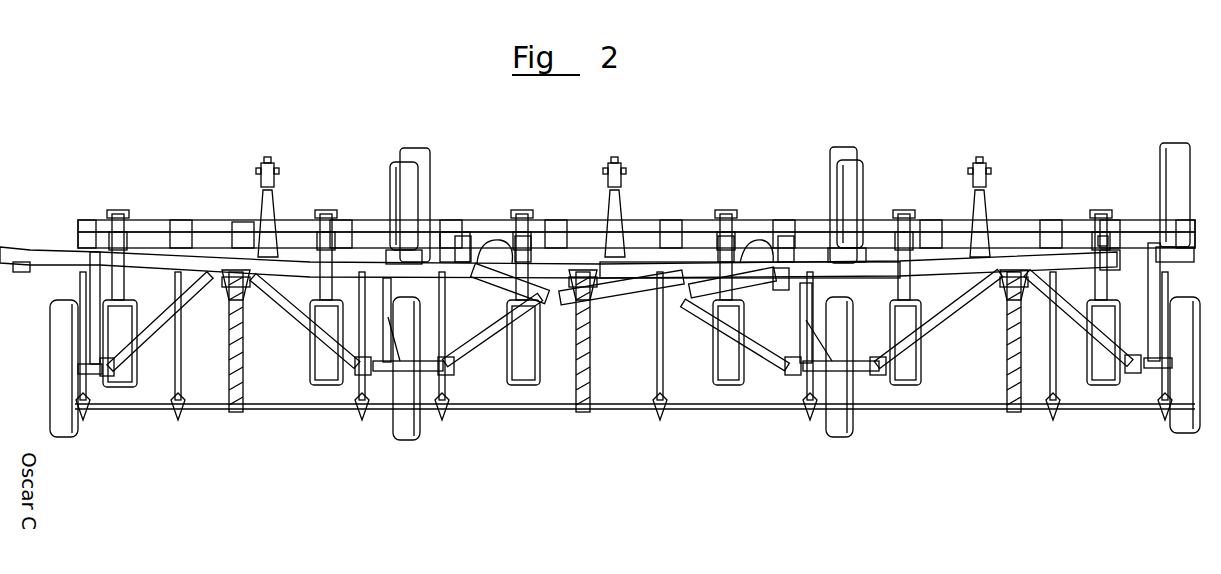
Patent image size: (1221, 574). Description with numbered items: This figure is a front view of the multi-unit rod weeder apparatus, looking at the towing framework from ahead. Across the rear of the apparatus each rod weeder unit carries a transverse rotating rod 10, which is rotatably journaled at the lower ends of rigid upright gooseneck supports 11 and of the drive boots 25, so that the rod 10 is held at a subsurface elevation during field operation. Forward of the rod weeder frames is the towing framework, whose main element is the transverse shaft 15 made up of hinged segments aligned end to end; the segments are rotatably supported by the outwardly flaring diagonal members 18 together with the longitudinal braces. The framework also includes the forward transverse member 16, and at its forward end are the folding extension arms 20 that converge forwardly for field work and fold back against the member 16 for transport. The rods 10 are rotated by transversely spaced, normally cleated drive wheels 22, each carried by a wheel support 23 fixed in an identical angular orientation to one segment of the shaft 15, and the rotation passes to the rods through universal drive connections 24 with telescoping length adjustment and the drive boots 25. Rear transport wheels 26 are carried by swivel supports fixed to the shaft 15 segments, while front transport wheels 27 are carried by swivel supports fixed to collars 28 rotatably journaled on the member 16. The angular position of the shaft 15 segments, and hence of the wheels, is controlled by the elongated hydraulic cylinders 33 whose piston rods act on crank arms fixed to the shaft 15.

The transverse rotating rod 10 is at (283, 404).
The gooseneck supports 11 is at (183, 392).
The transverse shaft 15 is at (690, 257).
The forward transverse member 16 is at (637, 272).
The outwardly flaring diagonal members 18 is at (170, 260).
The folding extension arms 20 is at (618, 306).
The drive wheels 22 is at (68, 428).
The wheel supports 23 is at (93, 280).
The universal drive connections 24 is at (160, 340).
The drive boots 25 is at (228, 352).
The rear transport wheels 26 is at (420, 170).
The front transport wheels 27 is at (398, 182).
The collars 28 is at (460, 278).
The hydraulic cylinders 33 is at (481, 238).